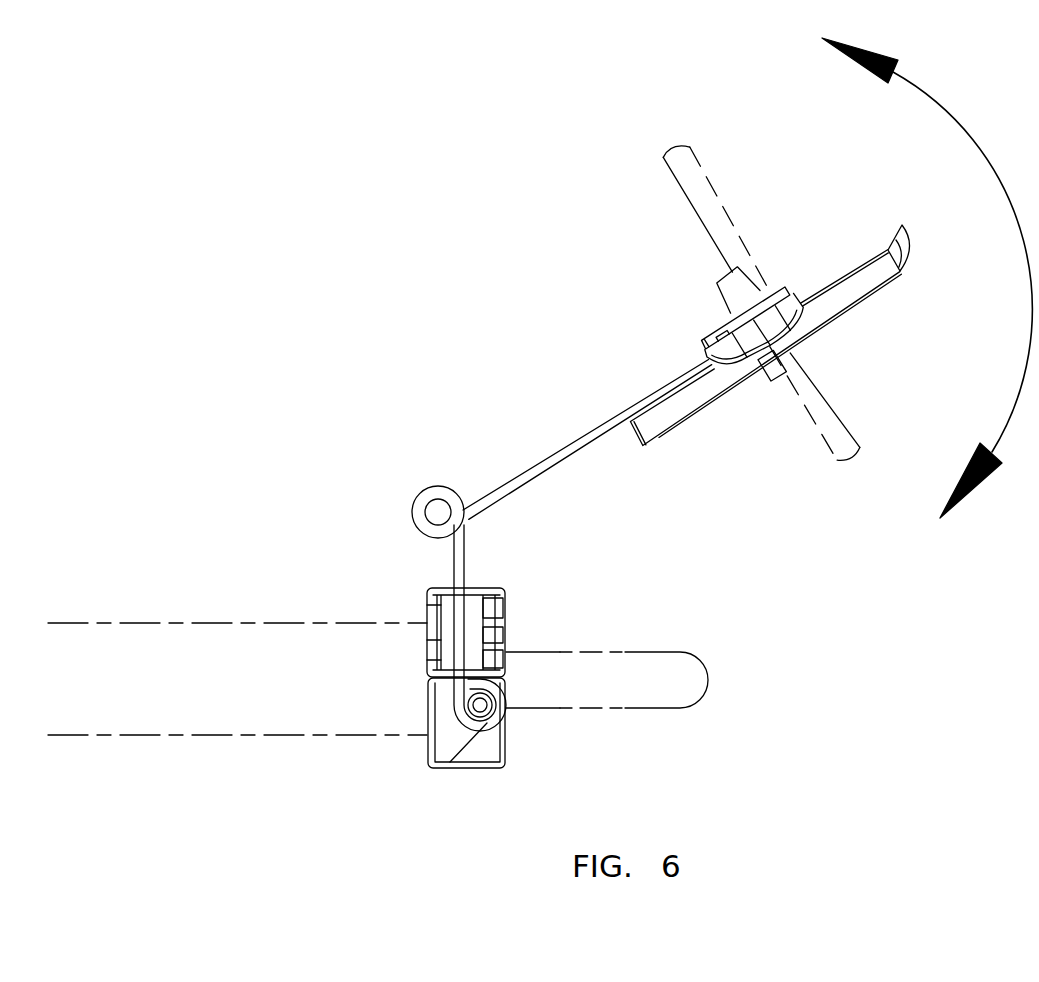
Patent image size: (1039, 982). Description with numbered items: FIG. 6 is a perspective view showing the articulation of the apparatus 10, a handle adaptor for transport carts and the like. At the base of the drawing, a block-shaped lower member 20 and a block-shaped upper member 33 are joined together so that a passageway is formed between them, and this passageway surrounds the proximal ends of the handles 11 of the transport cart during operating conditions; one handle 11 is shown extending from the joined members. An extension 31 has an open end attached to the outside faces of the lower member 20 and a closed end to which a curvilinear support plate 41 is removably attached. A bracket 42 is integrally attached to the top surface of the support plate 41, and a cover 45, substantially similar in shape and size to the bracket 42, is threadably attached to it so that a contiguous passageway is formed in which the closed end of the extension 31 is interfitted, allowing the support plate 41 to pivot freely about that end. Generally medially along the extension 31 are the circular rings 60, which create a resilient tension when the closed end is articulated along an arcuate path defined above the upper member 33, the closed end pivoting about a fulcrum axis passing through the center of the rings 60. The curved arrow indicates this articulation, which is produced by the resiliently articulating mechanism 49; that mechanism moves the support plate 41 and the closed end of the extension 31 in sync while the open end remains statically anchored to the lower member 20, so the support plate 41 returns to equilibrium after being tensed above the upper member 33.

The apparatus 10 is at (300, 222).
The handles 11 is at (697, 672).
The lower member 20 is at (428, 757).
The extension 31 is at (593, 432).
The upper member 33 is at (500, 590).
The support plate 41 is at (866, 272).
The bracket 42 is at (792, 300).
The cover 45 is at (723, 327).
The resiliently articulating mechanism 49 is at (522, 772).
The circular rings 60 is at (442, 492).